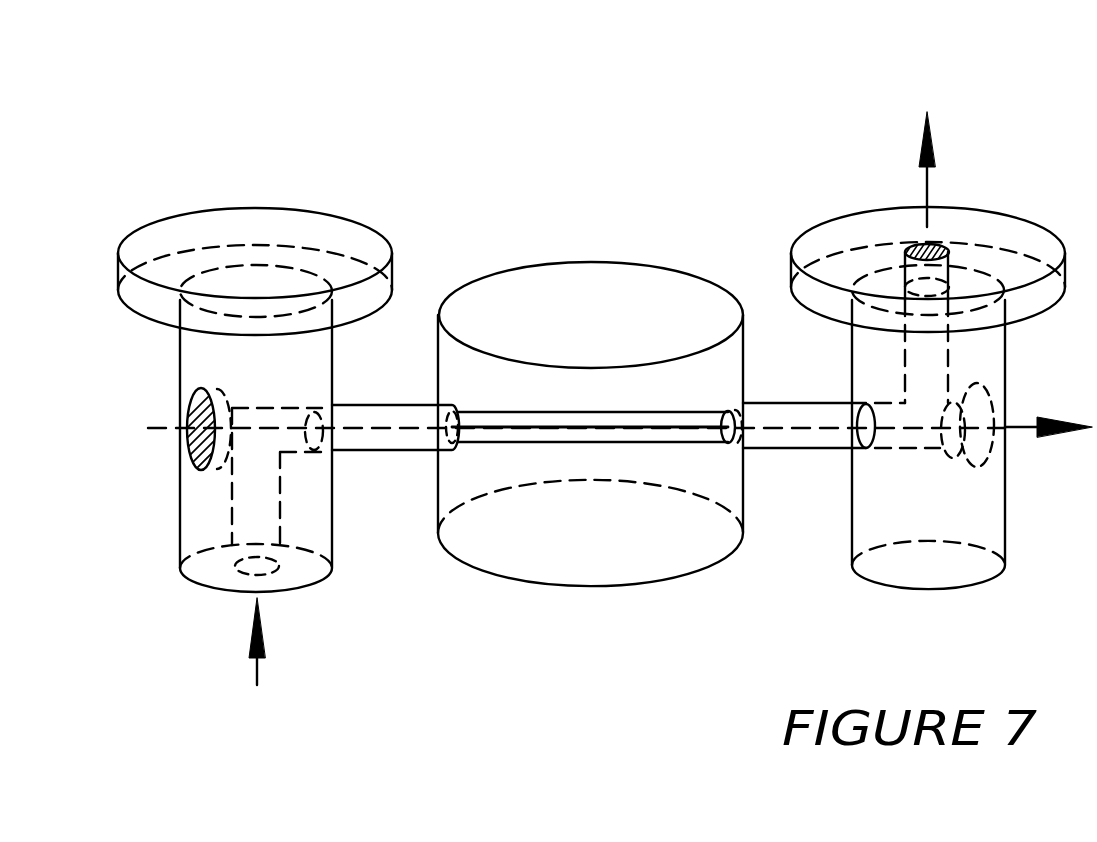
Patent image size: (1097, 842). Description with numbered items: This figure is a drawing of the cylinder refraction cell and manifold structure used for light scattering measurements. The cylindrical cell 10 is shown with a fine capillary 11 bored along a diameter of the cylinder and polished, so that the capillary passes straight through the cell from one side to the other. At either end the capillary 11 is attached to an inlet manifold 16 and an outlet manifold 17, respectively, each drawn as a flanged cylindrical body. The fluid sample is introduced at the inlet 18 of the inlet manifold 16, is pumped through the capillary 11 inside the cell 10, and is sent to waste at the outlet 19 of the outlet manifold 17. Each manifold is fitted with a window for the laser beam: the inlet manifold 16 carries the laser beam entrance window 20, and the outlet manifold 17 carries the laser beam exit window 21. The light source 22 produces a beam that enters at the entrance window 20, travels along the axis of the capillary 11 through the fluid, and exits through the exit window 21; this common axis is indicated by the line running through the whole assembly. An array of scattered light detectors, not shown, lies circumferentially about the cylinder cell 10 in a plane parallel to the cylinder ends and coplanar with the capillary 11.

The cylindrical cell 10 is at (618, 287).
The fine capillary 11 is at (592, 437).
The inlet manifold 16 is at (293, 223).
The outlet manifold 17 is at (960, 218).
The fluid sample inlet 18 is at (260, 662).
The waste outlet 19 is at (916, 261).
The laser beam entrance window 20 is at (228, 399).
The laser beam exit window 21 is at (957, 423).
The light source 22 is at (553, 431).